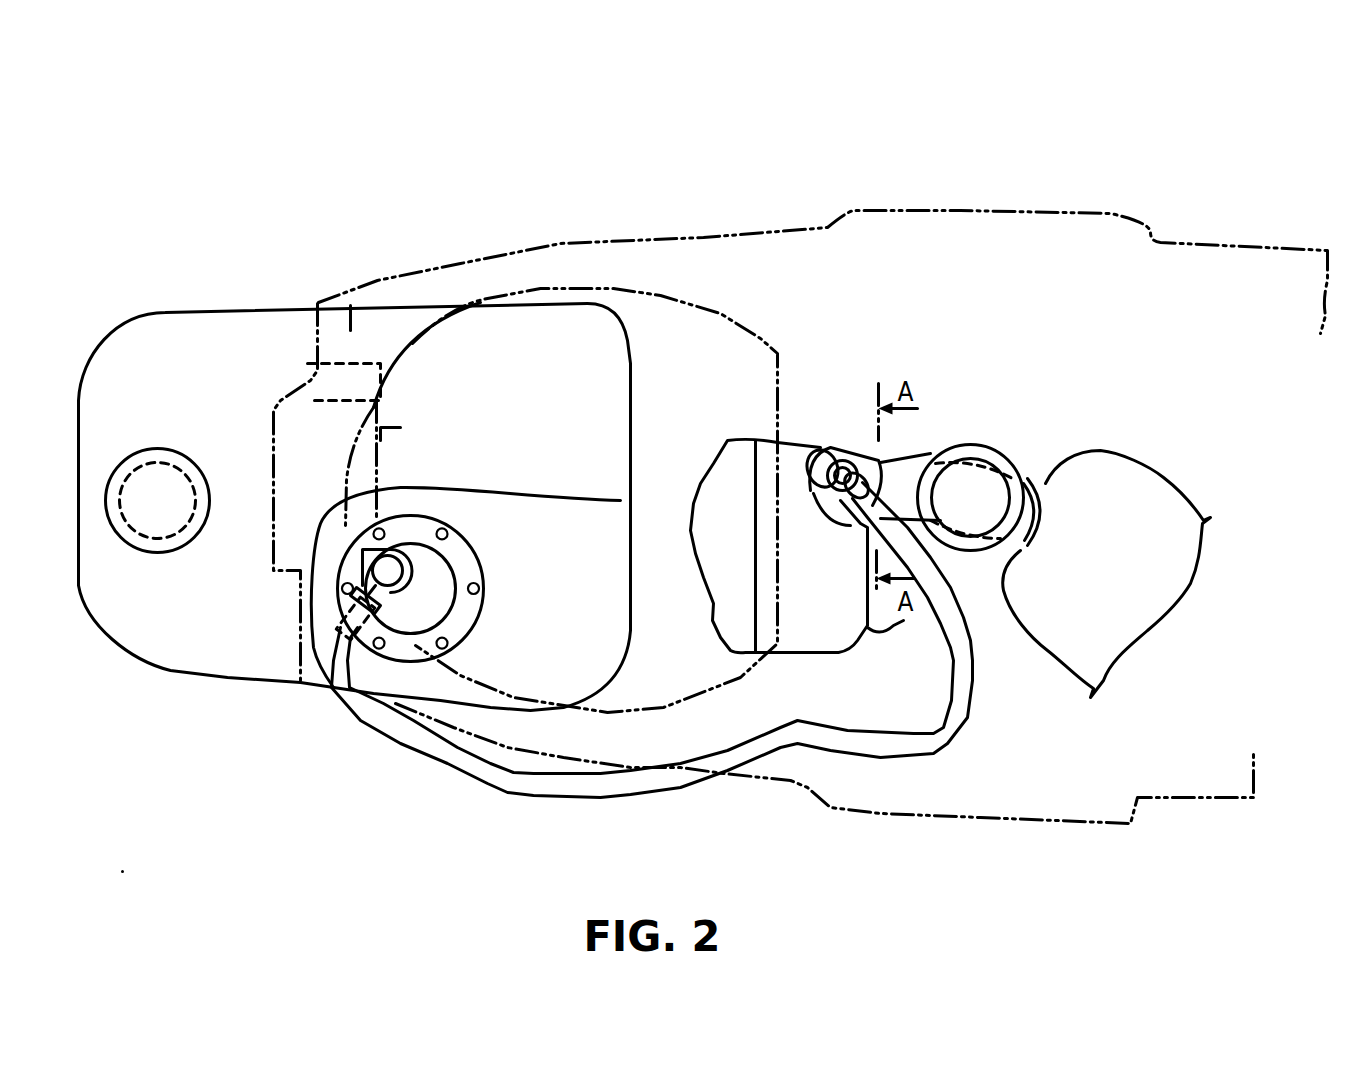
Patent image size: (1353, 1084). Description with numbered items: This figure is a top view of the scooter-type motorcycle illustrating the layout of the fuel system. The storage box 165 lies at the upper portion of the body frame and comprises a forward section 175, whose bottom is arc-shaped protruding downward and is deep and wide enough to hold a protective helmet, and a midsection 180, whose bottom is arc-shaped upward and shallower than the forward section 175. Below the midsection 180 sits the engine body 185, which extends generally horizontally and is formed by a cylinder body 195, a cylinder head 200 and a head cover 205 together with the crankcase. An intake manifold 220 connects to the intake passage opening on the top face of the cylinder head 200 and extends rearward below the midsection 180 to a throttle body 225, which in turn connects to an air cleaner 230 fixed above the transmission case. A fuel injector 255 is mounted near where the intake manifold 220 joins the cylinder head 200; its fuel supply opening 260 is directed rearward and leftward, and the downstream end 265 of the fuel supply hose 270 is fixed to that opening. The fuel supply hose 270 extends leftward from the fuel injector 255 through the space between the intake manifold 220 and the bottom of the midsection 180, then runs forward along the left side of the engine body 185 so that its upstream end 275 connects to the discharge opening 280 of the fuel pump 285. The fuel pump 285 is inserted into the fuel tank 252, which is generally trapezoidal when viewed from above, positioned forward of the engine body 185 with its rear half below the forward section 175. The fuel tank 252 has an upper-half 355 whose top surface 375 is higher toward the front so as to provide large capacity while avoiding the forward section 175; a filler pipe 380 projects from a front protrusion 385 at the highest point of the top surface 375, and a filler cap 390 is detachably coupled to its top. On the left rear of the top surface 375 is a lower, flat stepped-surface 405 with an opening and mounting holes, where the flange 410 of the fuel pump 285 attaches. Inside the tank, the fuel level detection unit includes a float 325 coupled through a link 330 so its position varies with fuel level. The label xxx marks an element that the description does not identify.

The storage box 165 is at (707, 236).
The forward section 175 is at (613, 288).
The midsection 180 is at (853, 343).
The engine body 185 is at (782, 655).
The cylinder body 195 is at (883, 648).
The cylinder head 200 is at (827, 657).
The head cover 205 is at (703, 618).
The intake manifold 220 is at (920, 457).
The throttle body 225 is at (980, 440).
The air cleaner 230 is at (1077, 447).
The fuel tank 252 is at (250, 312).
The fuel injector 255 is at (813, 447).
The fuel supply opening 260 is at (833, 453).
The downstream end 265 is at (867, 450).
The fuel supply hose 270 is at (613, 800).
The upstream end 275 is at (337, 597).
The discharge opening 280 is at (330, 607).
The fuel pump 285 is at (488, 594).
The float 325 is at (350, 363).
The link 330 is at (400, 427).
The upper-half 355 is at (203, 311).
The top surface 375 is at (287, 333).
The filler pipe 380 is at (140, 447).
The front protrusion 385 is at (170, 407).
The filler cap 390 is at (173, 450).
The stepped-surface 405 is at (483, 640).
The flange 410 is at (470, 570).
The unlabeled element xxx is at (350, 330).